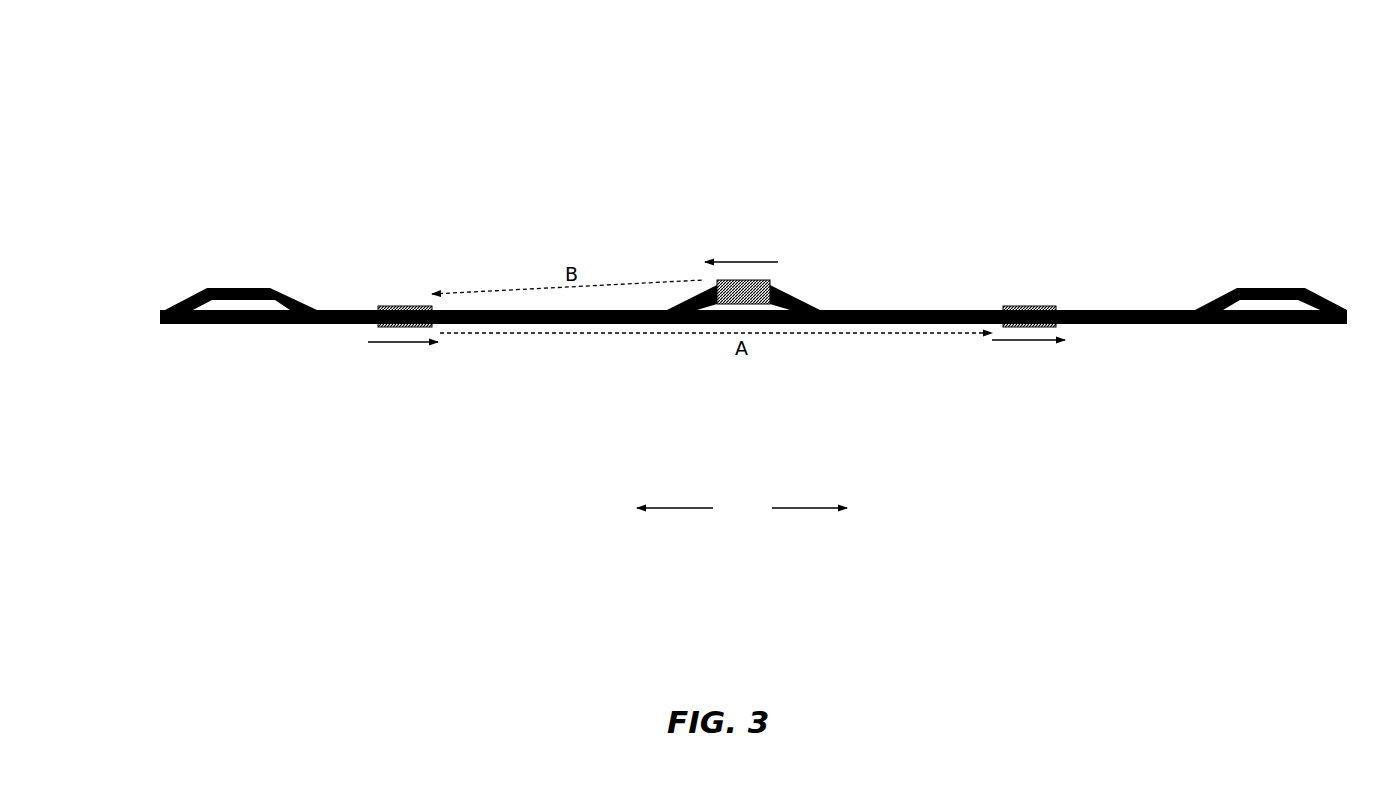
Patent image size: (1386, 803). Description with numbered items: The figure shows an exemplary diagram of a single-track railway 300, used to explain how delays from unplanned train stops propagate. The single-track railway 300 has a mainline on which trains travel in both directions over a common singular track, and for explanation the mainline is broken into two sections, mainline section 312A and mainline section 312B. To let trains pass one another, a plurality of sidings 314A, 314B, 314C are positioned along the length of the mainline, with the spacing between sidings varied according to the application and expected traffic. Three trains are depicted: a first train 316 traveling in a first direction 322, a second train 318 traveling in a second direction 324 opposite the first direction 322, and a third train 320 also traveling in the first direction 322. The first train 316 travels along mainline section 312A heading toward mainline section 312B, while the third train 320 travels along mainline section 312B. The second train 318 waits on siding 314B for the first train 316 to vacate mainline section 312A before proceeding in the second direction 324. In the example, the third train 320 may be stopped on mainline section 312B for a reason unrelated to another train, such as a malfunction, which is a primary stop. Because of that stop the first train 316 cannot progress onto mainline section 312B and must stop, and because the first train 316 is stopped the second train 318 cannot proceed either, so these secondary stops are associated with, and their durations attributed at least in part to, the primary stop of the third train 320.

The single-track railway 300 is at (287, 77).
The mainline section 312A is at (746, 373).
The mainline section 312B is at (1330, 373).
The siding 314A is at (315, 245).
The siding 314B is at (827, 244).
The siding 314C is at (1347, 245).
The first train 316 is at (404, 306).
The second train 318 is at (763, 280).
The third train 320 is at (1028, 306).
The first direction 322 is at (809, 492).
The second direction 324 is at (675, 492).